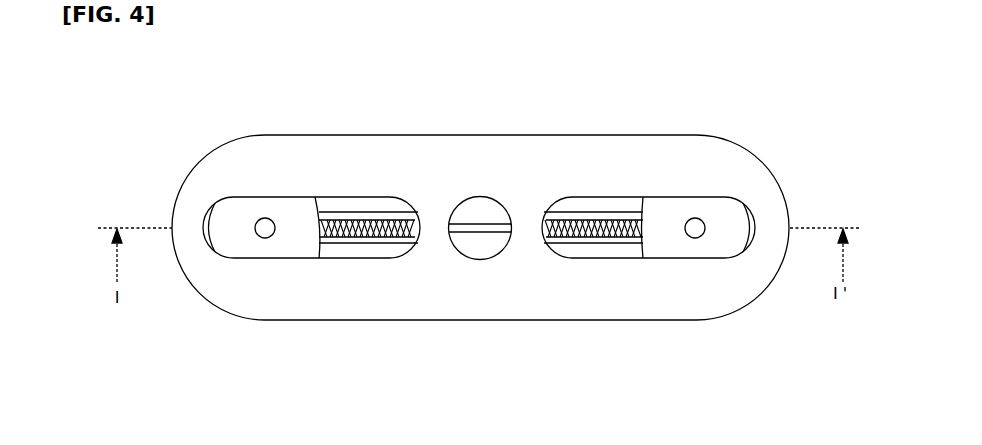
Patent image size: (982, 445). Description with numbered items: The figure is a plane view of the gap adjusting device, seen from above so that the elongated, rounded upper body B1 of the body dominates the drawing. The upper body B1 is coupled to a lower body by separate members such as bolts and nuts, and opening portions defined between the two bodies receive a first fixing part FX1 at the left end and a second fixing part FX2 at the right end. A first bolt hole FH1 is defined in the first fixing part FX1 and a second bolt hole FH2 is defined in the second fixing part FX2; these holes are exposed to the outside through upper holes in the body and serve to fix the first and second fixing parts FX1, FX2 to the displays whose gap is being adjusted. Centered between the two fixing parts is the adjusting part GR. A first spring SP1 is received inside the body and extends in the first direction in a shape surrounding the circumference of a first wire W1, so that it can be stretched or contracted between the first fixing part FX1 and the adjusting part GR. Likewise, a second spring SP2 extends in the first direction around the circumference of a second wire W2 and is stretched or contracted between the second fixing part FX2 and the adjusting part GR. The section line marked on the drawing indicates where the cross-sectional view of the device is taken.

The upper body B1 is at (746, 287).
The first wire W1 is at (345, 215).
The second wire W2 is at (615, 213).
The adjusting part GR is at (480, 210).
The first fixing part FX1 is at (239, 243).
The second fixing part FX2 is at (718, 243).
The first bolt hole FH1 is at (263, 238).
The second bolt hole FH2 is at (696, 238).
The first spring SP1 is at (382, 232).
The second spring SP2 is at (578, 232).